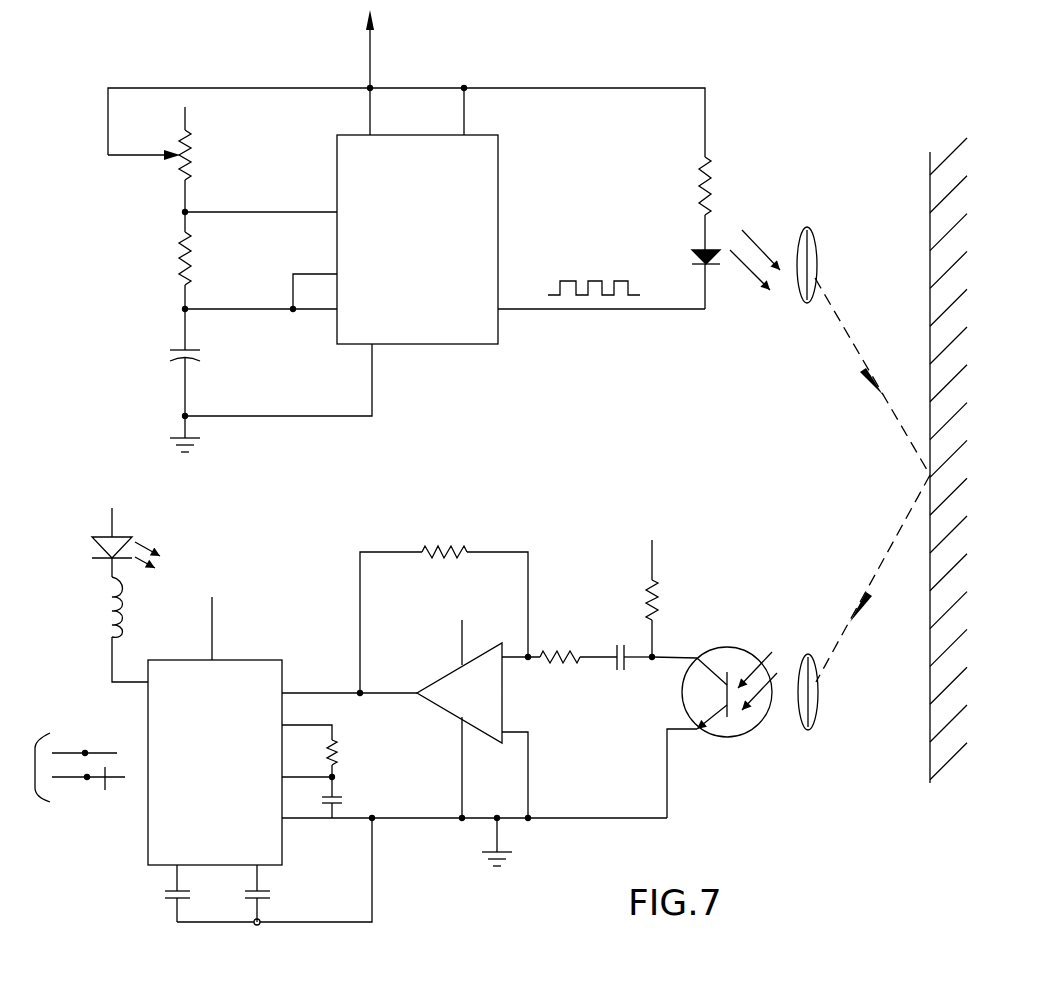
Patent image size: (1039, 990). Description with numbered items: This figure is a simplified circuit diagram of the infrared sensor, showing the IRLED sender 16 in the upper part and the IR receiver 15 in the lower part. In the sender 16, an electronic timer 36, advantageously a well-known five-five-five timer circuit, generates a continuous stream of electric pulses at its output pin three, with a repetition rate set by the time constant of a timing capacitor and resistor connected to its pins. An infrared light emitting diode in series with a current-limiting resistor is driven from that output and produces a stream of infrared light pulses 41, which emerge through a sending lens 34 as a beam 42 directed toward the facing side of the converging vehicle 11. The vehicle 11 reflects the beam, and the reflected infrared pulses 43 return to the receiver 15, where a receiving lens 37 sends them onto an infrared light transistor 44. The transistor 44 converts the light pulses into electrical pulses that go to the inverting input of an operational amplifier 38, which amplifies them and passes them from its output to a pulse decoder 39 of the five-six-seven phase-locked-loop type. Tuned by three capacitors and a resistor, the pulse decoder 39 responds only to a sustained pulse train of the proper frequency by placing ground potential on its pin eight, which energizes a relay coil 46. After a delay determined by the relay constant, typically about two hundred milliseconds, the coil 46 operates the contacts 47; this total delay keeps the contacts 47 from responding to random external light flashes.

The converging vehicle 11 is at (930, 648).
The IR receiver 15 is at (718, 528).
The IRLED sender 16 is at (660, 350).
The sending lens 34 is at (815, 248).
The electronic timer 36 is at (498, 240).
The receiving lens 37 is at (818, 706).
The operational amplifier 38 is at (502, 696).
The pulse decoder 39 is at (253, 660).
The infrared light pulses 41 is at (738, 240).
The transmitted beam path 42 is at (840, 316).
The reflected infrared pulses 43 is at (885, 557).
The infrared light transistor 44 is at (745, 730).
The relay coil 46 is at (100, 610).
The contacts 47 is at (80, 774).